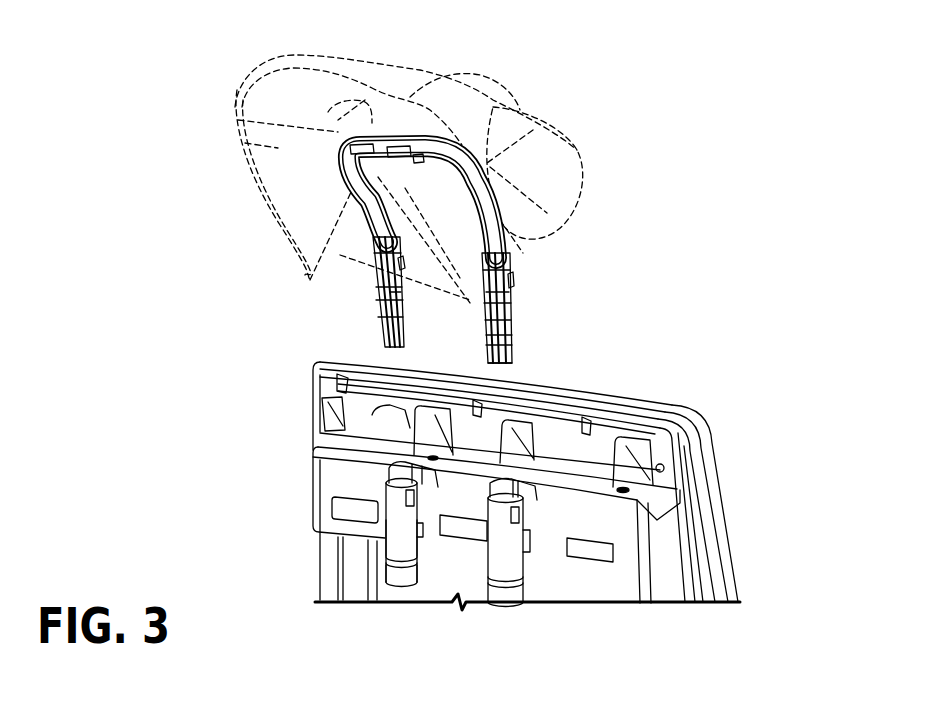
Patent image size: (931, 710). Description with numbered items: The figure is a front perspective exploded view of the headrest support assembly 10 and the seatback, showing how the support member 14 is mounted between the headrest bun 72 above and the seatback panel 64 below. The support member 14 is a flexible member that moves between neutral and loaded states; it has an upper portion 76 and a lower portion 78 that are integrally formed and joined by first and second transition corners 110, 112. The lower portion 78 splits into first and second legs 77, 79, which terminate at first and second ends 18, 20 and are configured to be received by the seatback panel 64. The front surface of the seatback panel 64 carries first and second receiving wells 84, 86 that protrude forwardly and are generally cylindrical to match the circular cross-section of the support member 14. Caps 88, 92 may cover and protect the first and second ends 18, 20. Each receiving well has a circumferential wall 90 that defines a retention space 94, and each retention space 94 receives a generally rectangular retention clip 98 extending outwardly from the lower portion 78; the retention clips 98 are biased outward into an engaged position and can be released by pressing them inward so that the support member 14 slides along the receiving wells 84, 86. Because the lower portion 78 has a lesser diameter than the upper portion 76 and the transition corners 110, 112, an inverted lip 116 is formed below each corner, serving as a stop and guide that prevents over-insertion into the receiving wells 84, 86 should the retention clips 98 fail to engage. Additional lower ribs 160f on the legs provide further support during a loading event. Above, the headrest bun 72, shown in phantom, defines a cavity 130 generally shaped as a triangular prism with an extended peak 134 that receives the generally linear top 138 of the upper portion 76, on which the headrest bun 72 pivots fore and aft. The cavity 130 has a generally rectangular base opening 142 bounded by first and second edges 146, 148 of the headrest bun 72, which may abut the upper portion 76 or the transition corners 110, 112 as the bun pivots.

The headrest support assembly 10 is at (196, 46).
The support member 14 is at (462, 173).
The first end 18 is at (395, 350).
The second end 20 is at (513, 372).
The seatback panel 64 is at (690, 410).
The headrest bun 72 is at (457, 142).
The upper portion 76 is at (473, 195).
The first leg 77 is at (393, 387).
The lower portion 78 is at (498, 323).
The second leg 79 is at (507, 343).
The first receiving well 84 is at (397, 550).
The second receiving well 86 is at (510, 560).
The cap 88 is at (400, 577).
The circumferential wall 90 is at (664, 468).
The cap 92 is at (507, 590).
The retention space 94 is at (396, 500).
The retention clip 98 is at (383, 273).
The first transition corner 110 is at (350, 190).
The second transition corner 112 is at (493, 240).
The inverted lip 116 is at (375, 258).
The cavity 130 is at (490, 150).
The extended peak 134 is at (365, 100).
The top 138 is at (362, 136).
The base opening 142 is at (560, 200).
The first edge 146 is at (380, 290).
The second edge 148 is at (507, 165).
The additional lower rib 160f is at (482, 295).